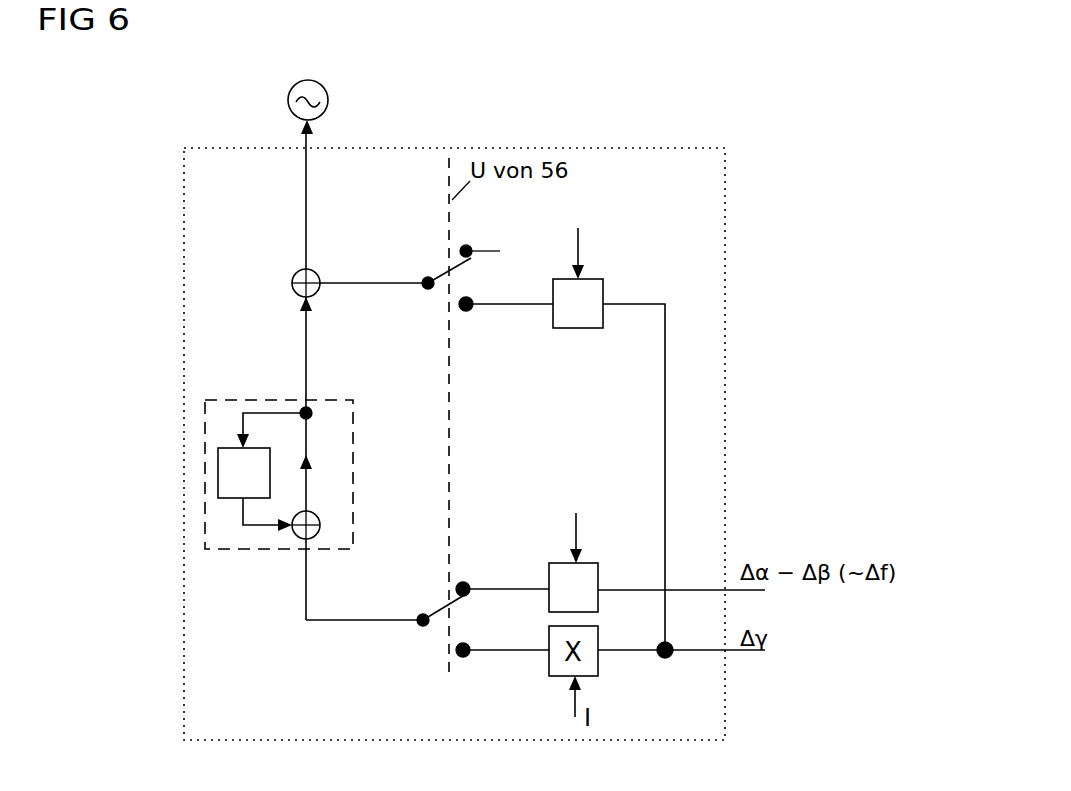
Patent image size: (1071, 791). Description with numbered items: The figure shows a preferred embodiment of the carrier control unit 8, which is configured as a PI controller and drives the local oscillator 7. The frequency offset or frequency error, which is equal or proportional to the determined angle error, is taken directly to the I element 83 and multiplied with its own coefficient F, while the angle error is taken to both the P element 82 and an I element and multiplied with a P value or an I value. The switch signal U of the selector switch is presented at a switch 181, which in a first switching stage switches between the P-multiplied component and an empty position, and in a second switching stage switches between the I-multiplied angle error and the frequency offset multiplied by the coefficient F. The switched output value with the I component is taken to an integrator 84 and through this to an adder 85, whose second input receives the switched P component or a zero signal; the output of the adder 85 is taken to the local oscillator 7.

The local oscillator 7 is at (293, 113).
The carrier control unit 8 is at (675, 148).
The P element 82 is at (603, 284).
The I element 83 is at (640, 307).
The integrator 84 is at (205, 427).
The adder 85 is at (295, 274).
The switch 181 is at (426, 278).